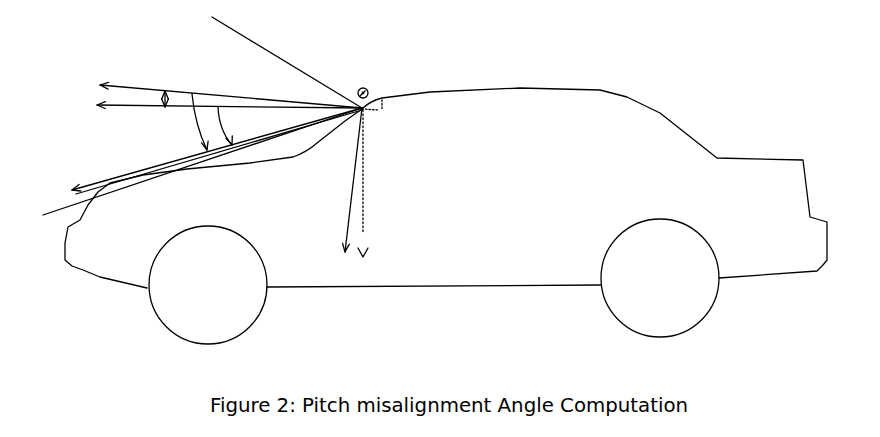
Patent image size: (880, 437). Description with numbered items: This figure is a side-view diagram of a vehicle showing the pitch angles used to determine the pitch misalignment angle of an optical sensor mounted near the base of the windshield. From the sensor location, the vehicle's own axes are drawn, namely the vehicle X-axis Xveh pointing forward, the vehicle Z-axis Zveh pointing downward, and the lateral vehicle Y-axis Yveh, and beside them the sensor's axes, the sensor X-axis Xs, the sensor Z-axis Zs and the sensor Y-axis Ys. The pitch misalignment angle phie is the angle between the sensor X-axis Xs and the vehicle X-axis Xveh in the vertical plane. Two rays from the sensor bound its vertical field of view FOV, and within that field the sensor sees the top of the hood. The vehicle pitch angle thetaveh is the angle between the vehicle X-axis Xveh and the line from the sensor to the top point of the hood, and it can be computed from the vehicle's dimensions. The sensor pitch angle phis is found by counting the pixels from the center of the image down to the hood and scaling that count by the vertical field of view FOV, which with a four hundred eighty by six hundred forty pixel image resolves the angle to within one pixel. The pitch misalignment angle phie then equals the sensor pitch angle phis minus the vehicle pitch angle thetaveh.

The vertical field of view FOV is at (195, 125).
The vehicle X-axis Xveh is at (229, 118).
The sensor X-axis Xs is at (231, 85).
The sensor vertical axis Zs is at (341, 186).
The vehicle vertical axis Zveh is at (376, 188).
The vehicle lateral axis Yveh is at (354, 86).
The sensor lateral axis Ys is at (372, 91).
The pitch misalignment angle phie is at (150, 99).
The sensor pitch angle phis is at (185, 122).
The vehicle pitch angle thetaveh is at (236, 126).